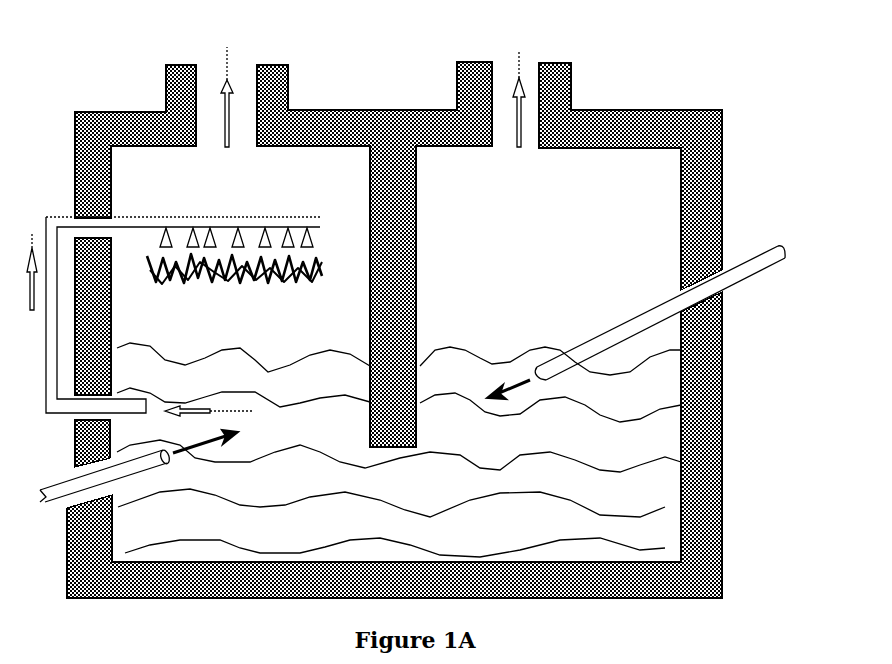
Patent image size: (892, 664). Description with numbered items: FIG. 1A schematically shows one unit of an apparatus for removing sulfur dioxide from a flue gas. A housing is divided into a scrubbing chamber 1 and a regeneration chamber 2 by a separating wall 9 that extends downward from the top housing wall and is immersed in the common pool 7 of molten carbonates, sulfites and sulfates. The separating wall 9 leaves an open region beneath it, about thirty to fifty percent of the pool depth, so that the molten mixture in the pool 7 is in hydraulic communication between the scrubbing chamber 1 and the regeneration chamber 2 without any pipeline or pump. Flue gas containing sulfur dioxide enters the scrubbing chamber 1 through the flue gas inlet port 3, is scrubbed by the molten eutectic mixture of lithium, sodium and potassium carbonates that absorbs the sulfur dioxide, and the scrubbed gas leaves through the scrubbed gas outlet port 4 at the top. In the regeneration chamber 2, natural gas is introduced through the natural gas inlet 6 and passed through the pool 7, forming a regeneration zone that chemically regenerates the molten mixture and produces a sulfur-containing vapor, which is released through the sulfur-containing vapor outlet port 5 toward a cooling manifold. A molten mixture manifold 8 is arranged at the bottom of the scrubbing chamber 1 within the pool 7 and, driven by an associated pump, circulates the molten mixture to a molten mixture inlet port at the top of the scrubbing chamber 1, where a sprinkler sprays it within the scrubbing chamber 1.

The scrubbing chamber 1 is at (399, 367).
The regeneration chamber 2 is at (532, 344).
The flue gas inlet port 3 is at (133, 496).
The scrubbed gas outlet port 4 is at (243, 88).
The sulfur-containing vapor outlet port 5 is at (545, 89).
The natural gas inlet 6 is at (661, 280).
The pool 7 is at (399, 498).
The molten mixture manifold 8 is at (168, 316).
The separating wall 9 is at (374, 254).